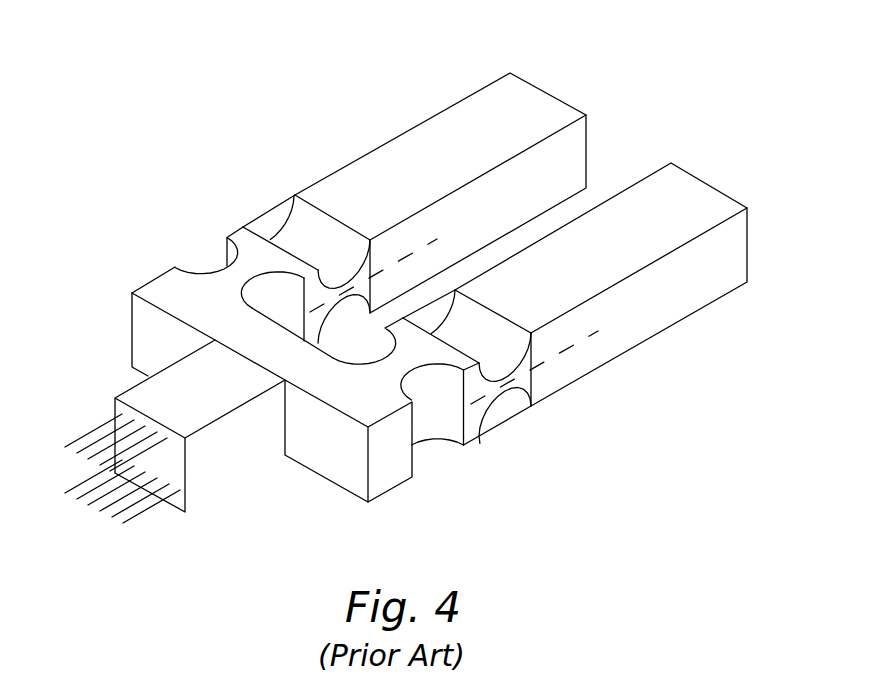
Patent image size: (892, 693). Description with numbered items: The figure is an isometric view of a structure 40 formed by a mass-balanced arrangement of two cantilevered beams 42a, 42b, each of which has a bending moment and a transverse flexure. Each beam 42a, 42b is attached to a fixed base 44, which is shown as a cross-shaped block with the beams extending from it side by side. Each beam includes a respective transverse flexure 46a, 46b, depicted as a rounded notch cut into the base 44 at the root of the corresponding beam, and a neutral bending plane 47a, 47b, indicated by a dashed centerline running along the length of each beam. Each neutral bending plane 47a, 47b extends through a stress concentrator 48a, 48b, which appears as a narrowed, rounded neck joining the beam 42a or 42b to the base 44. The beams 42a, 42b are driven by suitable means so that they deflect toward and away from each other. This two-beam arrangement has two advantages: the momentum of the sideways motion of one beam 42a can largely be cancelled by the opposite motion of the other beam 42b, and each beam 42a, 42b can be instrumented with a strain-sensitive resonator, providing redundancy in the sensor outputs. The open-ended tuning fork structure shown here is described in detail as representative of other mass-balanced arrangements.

The structure 40 is at (185, 160).
The cantilevered beam 42a is at (527, 105).
The cantilevered beam 42b is at (687, 198).
The fixed base 44 is at (235, 465).
The transverse flexure 46a is at (233, 273).
The transverse flexure 46b is at (418, 427).
The neutral bending plane 47a is at (418, 248).
The neutral bending plane 47b is at (575, 345).
The stress concentrator 48a is at (305, 247).
The stress concentrator 48b is at (498, 355).